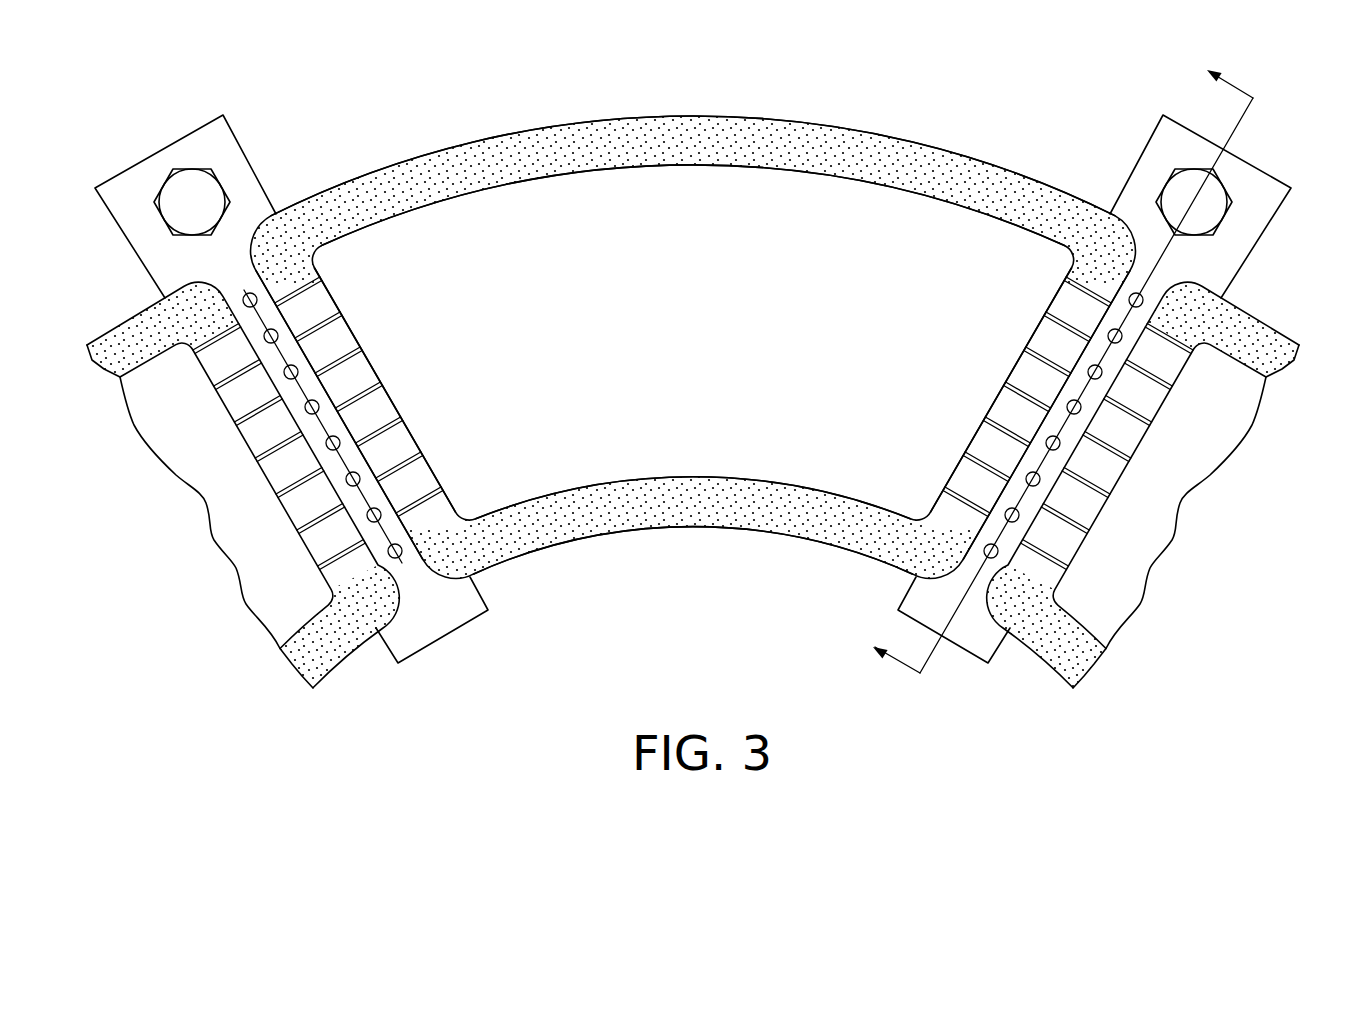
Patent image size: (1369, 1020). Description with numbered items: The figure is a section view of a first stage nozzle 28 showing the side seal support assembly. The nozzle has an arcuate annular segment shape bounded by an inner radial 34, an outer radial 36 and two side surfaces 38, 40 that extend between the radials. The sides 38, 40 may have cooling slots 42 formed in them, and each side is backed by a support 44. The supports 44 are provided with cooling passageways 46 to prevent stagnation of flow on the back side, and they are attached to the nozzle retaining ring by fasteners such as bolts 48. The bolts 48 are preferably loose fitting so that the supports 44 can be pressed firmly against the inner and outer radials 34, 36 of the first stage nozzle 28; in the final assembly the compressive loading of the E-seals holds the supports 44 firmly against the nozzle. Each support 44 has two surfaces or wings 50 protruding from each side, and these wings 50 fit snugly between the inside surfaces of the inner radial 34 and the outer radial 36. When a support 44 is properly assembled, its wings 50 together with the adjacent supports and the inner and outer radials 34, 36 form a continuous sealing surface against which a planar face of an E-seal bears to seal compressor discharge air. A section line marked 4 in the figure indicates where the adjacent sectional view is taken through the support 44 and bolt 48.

The first stage nozzle 28 is at (601, 110).
The inner radial 34 is at (722, 521).
The outer radial 36 is at (762, 140).
The side surface 38 is at (350, 334).
The side surface 40 is at (1037, 328).
The cooling slot 42 is at (385, 422).
The support 44 is at (427, 626).
The cooling passageway 46 is at (423, 530).
The bolt 48 is at (188, 188).
The wing 50 is at (1087, 500).
The section line 4- 4 is at (1080, 388).